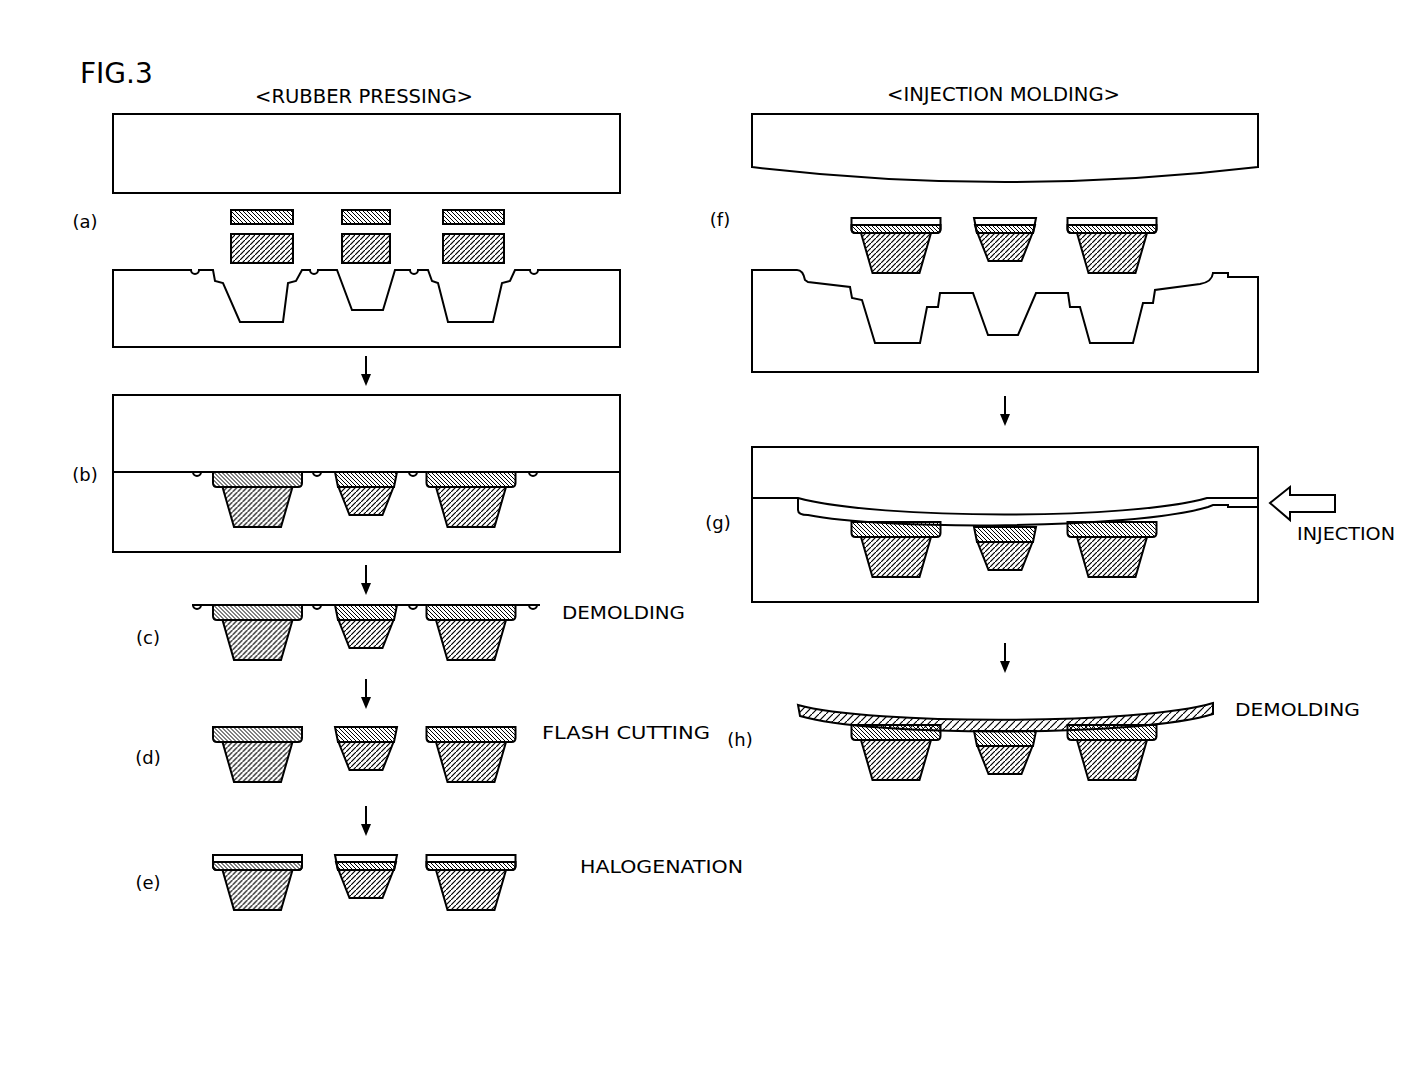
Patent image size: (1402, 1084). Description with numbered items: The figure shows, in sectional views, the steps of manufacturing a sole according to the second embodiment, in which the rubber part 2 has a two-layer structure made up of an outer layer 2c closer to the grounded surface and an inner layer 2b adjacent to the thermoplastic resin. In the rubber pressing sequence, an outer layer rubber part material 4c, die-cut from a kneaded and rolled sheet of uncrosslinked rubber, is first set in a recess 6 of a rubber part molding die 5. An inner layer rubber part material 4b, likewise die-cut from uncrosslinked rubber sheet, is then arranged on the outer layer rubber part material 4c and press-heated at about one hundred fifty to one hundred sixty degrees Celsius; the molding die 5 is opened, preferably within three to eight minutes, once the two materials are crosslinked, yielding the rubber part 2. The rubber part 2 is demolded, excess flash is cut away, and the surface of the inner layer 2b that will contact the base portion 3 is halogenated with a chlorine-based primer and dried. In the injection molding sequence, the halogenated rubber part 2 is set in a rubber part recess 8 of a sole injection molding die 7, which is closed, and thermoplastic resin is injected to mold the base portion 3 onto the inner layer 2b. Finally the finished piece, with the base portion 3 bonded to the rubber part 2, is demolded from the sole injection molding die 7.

The rubber part 2 is at (710, 565).
The inner layer 2b is at (515, 482).
The outer layer 2c is at (551, 485).
The base portion 3 is at (1097, 719).
The inner layer rubber part material 4b is at (504, 217).
The outer layer rubber part material 4c is at (495, 249).
The rubber part molding die 5 is at (603, 157).
The recess 6 is at (470, 323).
The sole injection molding die 7 is at (1243, 140).
The rubber part recess 8 is at (1115, 344).